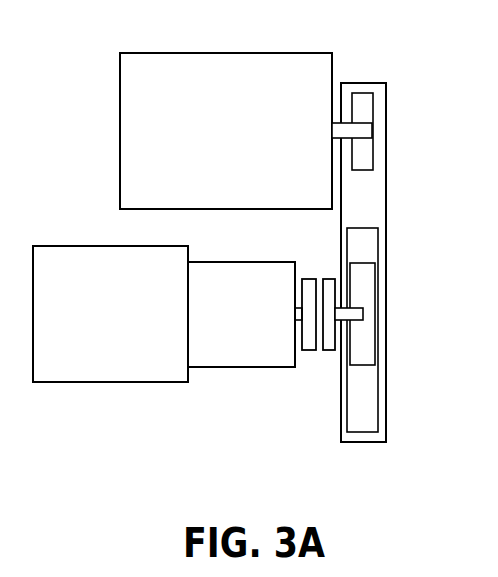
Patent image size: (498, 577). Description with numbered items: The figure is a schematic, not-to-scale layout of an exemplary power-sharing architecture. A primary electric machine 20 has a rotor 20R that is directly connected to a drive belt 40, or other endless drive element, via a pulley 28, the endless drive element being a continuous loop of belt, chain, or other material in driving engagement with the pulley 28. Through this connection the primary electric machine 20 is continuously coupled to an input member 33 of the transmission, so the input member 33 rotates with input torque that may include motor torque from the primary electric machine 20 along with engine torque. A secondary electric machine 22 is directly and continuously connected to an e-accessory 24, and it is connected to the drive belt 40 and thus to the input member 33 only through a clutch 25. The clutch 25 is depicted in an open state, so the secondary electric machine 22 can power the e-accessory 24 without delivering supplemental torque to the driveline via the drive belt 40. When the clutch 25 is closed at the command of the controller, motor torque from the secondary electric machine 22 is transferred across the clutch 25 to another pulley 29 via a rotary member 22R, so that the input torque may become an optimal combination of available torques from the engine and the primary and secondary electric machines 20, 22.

The primary electric machine 20 is at (221, 53).
The rotor 20R is at (363, 130).
The secondary electric machine 22 is at (220, 262).
The rotary member 22R is at (363, 313).
The e-accessory 24 is at (110, 246).
The clutch 25 is at (316, 365).
The pulley 28 is at (363, 150).
The pulley 29 is at (362, 345).
The input member 33 is at (362, 398).
The drive belt 40 is at (363, 195).